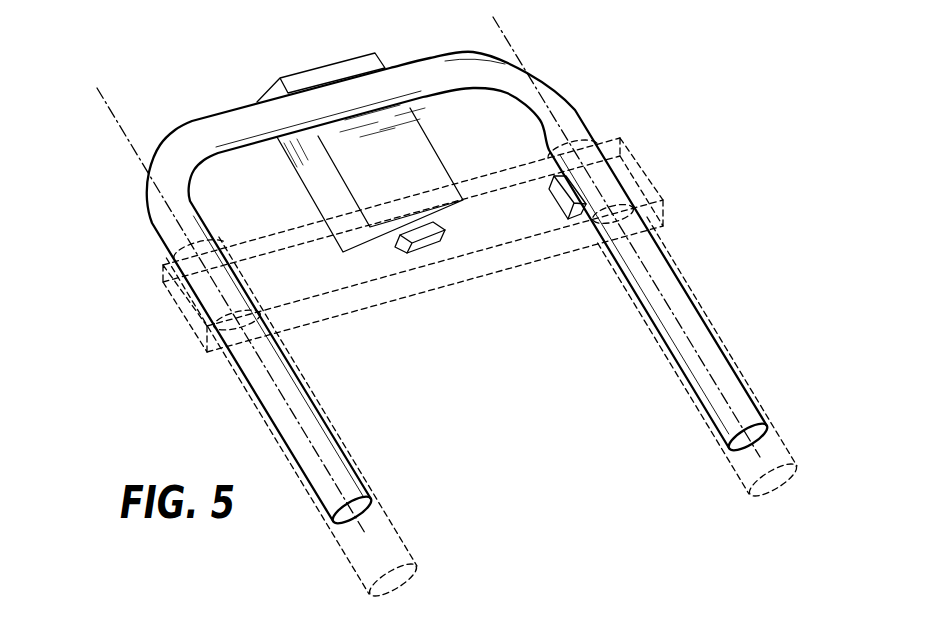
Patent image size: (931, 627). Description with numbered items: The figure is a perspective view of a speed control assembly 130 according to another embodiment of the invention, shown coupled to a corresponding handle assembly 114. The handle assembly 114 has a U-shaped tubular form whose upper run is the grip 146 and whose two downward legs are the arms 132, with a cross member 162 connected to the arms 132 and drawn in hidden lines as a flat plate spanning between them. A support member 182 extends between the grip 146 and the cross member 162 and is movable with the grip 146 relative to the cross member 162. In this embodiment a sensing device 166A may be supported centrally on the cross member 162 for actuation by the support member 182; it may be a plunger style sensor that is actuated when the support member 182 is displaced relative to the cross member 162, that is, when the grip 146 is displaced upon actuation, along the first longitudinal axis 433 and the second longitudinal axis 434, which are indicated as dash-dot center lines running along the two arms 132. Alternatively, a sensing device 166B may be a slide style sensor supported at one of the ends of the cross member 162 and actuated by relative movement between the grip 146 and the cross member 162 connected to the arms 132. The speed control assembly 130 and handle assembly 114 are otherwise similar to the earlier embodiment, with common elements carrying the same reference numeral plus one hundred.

The handle assembly 114 is at (740, 279).
The speed control assembly 130 is at (630, 62).
The arms 132 is at (782, 440).
The grip 146 is at (222, 122).
The cross member 162 is at (503, 263).
The sensing device 166A is at (431, 246).
The sensing device 166B is at (578, 193).
The support member 182 is at (333, 147).
The first longitudinal axis 433 is at (130, 143).
The second longitudinal axis 434 is at (513, 50).